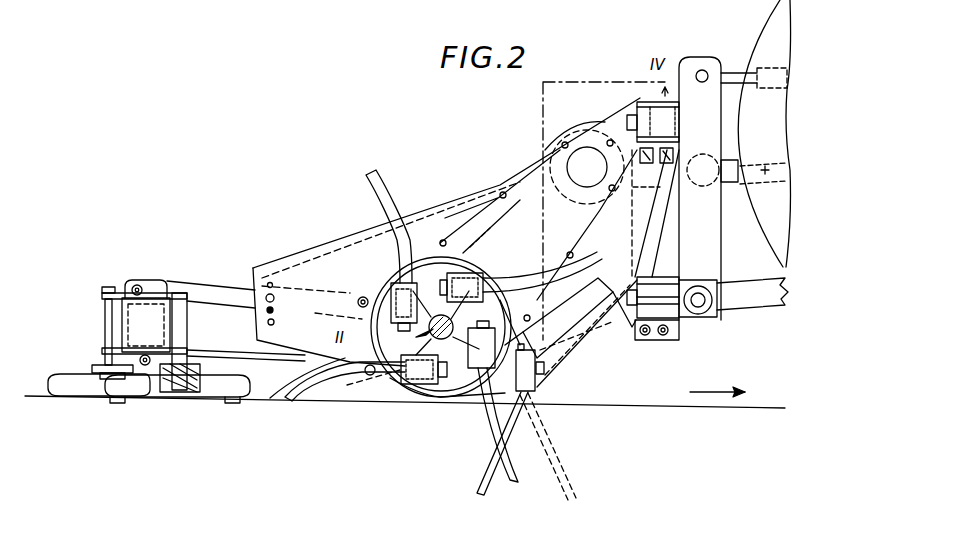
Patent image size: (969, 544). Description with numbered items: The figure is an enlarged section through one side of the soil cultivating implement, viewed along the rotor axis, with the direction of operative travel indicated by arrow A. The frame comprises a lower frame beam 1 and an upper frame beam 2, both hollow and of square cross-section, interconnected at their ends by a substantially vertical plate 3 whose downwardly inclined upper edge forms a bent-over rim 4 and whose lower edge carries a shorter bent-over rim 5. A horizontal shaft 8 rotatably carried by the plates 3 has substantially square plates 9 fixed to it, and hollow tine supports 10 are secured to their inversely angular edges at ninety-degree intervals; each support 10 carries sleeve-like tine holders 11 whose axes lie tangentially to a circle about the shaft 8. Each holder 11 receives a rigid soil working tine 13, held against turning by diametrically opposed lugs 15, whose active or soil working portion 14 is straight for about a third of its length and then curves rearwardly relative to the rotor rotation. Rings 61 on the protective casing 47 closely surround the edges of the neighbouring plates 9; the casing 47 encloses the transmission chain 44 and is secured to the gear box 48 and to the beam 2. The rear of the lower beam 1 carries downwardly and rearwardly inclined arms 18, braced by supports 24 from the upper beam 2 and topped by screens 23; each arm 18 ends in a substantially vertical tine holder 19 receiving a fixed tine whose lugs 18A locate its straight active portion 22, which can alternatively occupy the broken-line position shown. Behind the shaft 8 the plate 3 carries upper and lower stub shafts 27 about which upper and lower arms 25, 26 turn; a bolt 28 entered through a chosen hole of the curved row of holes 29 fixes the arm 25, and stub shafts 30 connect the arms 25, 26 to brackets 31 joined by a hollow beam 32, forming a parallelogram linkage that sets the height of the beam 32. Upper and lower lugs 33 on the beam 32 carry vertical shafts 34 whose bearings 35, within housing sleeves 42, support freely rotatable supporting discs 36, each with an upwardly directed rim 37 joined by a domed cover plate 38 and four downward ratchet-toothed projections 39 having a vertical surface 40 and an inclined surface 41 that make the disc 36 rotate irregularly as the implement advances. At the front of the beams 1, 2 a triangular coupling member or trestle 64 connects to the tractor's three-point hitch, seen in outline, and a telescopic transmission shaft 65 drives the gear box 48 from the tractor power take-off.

The lower frame beam 1 is at (654, 278).
The upper frame beam 2 is at (634, 95).
The plate 3 is at (318, 258).
The bent-over rim 4 is at (433, 208).
The bent-over rim 5 is at (448, 408).
The shaft 8 is at (375, 366).
The plate 9 is at (433, 260).
The tine support 10 is at (488, 284).
The tine holder 11 is at (392, 292).
The soil working tine 13 is at (378, 172).
The active or soil working portion 14 is at (488, 410).
The lug 15 is at (362, 392).
The arm 18 is at (632, 340).
The lug 18A is at (548, 400).
The tine holder 19 is at (540, 378).
The active or soil working portion 22 is at (476, 490).
The screen 23 is at (590, 312).
The support 24 is at (653, 210).
The upper arm 25 is at (240, 282).
The lower arm 26 is at (248, 352).
The stub shaft 27 is at (360, 306).
The bolt 28 is at (272, 311).
The hole 29 is at (272, 283).
The stub shaft 30 is at (140, 283).
The bracket 31 is at (160, 280).
The hollow beam 32 is at (108, 320).
The lug 33 is at (102, 294).
The shaft 34 is at (112, 272).
The bearing 35 is at (172, 398).
The supporting disc 36 is at (238, 405).
The rim 37 is at (108, 398).
The domed cover plate 38 is at (195, 362).
The projection 39 is at (190, 399).
The surface 40 is at (200, 398).
The surface 41 is at (182, 399).
The housing sleeve 42 is at (140, 398).
The transmission chain 44 is at (535, 205).
The protective casing 47 is at (530, 176).
The gear box 48 is at (585, 118).
The ring 61 is at (410, 388).
The coupling member or trestle 64 is at (712, 118).
The telescopic transmission shaft 65 is at (772, 160).
The direction of operative travel A is at (718, 394).